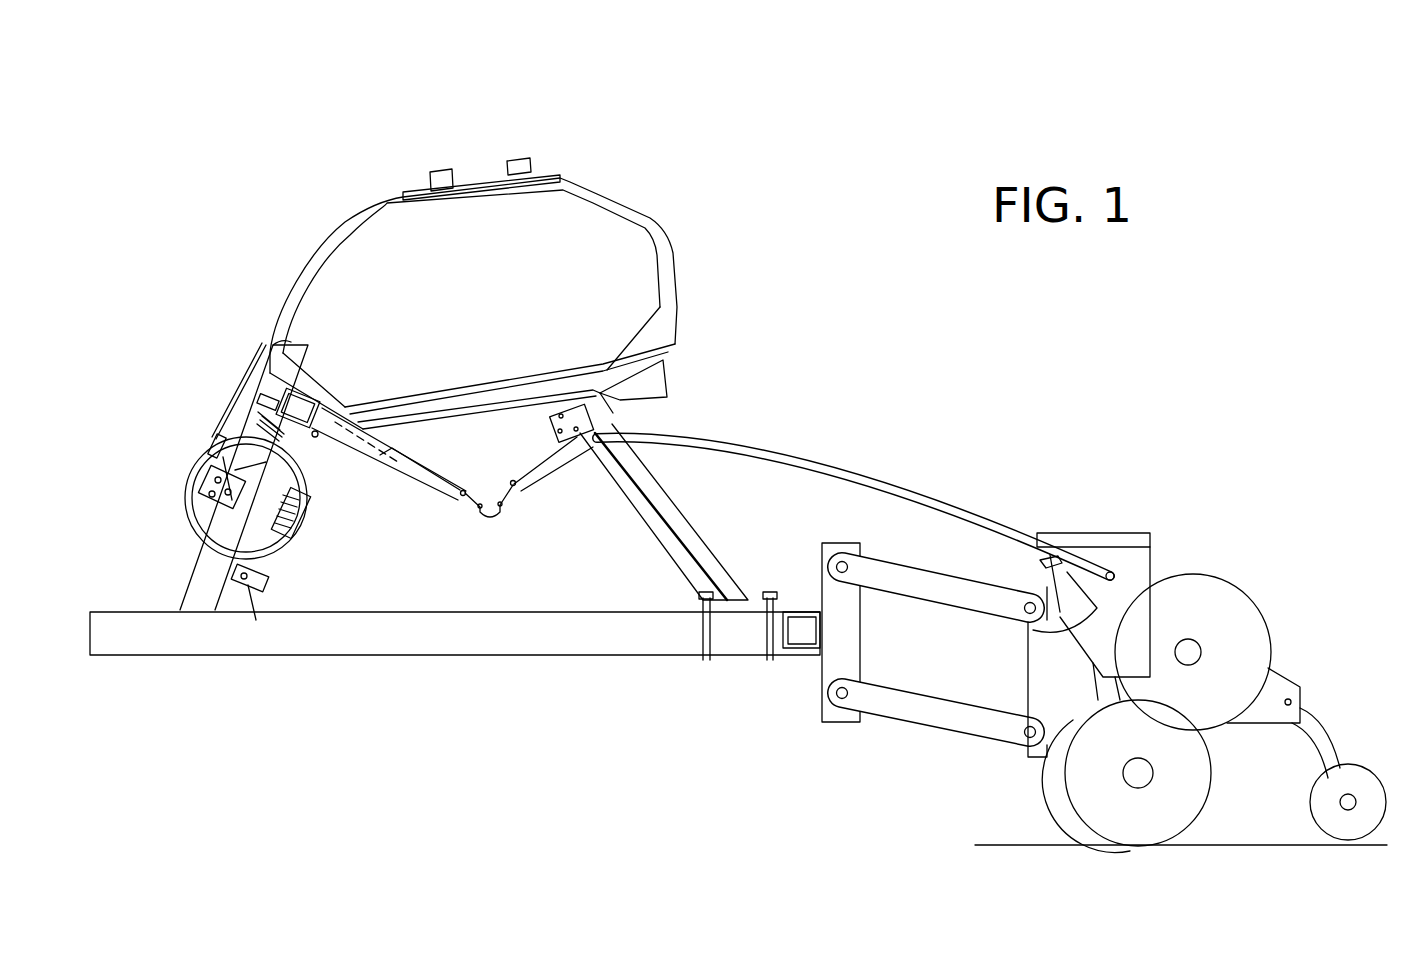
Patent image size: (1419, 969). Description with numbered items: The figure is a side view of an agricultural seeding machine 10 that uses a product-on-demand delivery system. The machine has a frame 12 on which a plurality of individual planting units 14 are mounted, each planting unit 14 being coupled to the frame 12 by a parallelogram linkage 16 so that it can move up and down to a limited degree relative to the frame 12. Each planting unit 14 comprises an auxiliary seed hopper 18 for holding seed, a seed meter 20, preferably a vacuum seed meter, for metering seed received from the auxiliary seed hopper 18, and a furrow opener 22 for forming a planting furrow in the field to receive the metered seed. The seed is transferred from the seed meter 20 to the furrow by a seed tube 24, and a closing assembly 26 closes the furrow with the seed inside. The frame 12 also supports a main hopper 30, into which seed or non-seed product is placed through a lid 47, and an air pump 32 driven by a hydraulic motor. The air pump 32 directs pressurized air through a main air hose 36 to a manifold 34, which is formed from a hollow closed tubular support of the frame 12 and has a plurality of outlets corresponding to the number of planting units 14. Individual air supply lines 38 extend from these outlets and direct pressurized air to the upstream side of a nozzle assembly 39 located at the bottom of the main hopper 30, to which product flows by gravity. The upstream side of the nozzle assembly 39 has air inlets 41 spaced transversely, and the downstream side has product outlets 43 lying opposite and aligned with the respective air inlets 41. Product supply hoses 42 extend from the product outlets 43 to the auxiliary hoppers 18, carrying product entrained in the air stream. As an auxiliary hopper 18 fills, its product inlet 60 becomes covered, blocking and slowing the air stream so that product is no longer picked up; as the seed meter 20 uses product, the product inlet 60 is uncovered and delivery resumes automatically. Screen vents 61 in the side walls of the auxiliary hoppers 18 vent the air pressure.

The agricultural seeding machine 10 is at (825, 280).
The frame 12 is at (482, 660).
The planting unit 14 is at (1185, 505).
The parallelogram linkage 16 is at (908, 738).
The auxiliary seed hopper 18 is at (1131, 650).
The seed meter 20 is at (1227, 630).
The furrow opener 22 is at (1058, 838).
The seed tube 24 is at (1093, 690).
The closing assembly 26 is at (1352, 768).
The main hopper 30 is at (456, 310).
The air pump 32 is at (190, 531).
The manifold 34 is at (262, 388).
The main air hose 36 is at (258, 412).
The air supply line 38 is at (323, 440).
The nozzle assembly 39 is at (462, 533).
The air inlet 41 is at (462, 497).
The product outlet 43 is at (514, 490).
The product supply hose 42 is at (733, 463).
The lid 47 is at (481, 170).
The auxiliary hopper product inlet 60 is at (1112, 573).
The screen vent 61 is at (1037, 563).